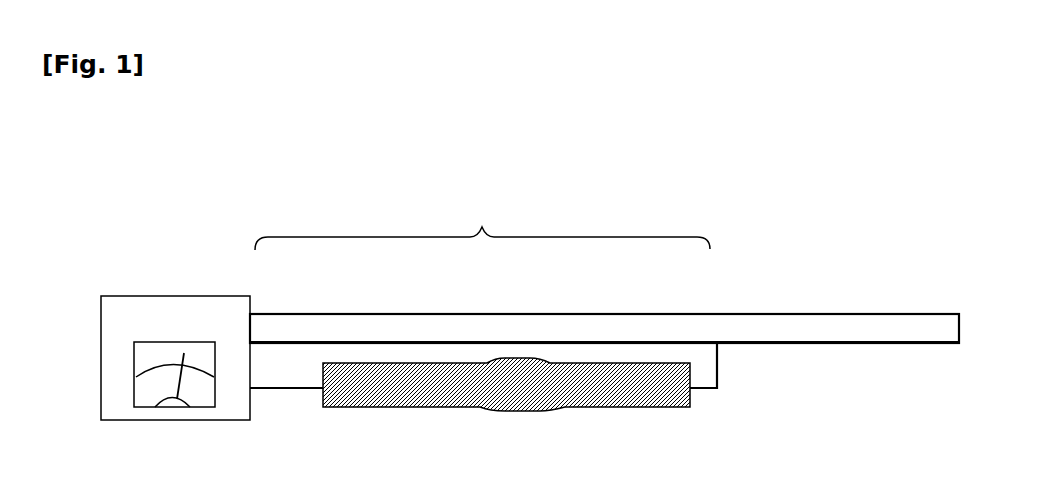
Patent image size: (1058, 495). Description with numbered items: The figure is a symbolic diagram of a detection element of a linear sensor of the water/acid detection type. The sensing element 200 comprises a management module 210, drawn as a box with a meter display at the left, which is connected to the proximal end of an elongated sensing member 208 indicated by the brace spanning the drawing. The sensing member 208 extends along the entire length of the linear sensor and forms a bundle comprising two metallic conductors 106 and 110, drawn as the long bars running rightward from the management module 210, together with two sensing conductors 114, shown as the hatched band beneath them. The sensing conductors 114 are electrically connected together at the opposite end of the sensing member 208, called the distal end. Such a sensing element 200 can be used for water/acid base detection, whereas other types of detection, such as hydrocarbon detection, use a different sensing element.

The sensing element 200 is at (236, 191).
The management module 210 is at (195, 312).
The metallic conductor 106 is at (392, 312).
The metallic conductor 110 is at (482, 342).
The sensing member 208 is at (482, 223).
The sensing conductors 114 is at (418, 407).